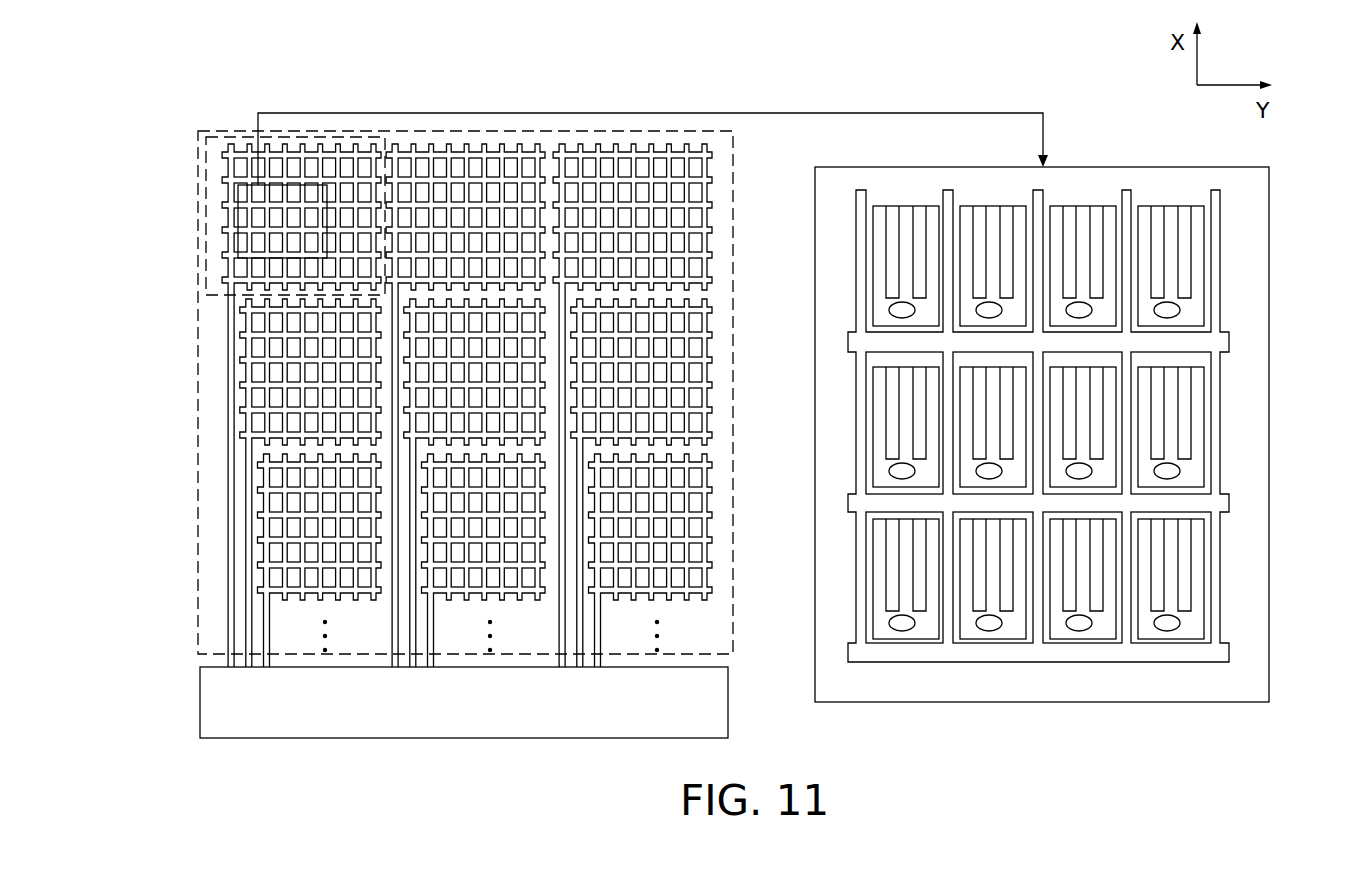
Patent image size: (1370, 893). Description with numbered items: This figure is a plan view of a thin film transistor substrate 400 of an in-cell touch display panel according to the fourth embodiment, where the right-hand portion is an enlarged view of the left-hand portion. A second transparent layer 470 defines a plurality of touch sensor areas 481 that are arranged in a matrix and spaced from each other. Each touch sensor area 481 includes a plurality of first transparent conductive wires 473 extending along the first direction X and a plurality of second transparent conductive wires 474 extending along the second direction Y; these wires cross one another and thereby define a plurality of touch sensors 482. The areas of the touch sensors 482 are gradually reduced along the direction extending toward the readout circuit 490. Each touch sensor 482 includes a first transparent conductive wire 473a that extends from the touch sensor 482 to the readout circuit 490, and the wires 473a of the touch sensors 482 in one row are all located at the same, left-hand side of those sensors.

The thin film transistor substrate 400 is at (628, 78).
The second transparent layer 470 is at (207, 315).
The first transparent conductive wires 473 is at (230, 167).
The first transparent conductive wire 473a is at (237, 382).
The second transparent conductive wires 474 is at (240, 146).
The touch sensor areas 481 is at (207, 222).
The touch sensors 482 is at (442, 137).
The readout circuit 490 is at (215, 667).